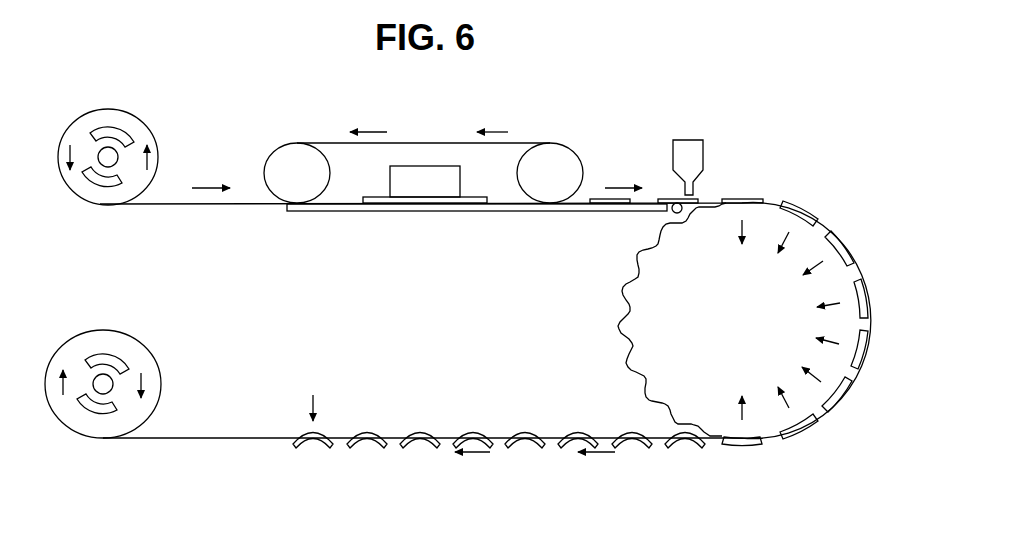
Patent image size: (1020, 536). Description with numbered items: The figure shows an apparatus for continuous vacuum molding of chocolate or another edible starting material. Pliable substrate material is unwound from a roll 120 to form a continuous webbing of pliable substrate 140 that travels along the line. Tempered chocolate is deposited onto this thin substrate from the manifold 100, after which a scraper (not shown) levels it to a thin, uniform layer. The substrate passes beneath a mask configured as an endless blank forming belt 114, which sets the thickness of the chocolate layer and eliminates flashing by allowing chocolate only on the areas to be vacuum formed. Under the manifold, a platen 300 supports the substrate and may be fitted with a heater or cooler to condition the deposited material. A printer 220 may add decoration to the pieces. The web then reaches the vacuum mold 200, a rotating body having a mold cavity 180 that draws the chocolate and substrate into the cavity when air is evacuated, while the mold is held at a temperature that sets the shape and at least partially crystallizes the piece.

The manifold 100 is at (405, 165).
The endless blank forming belt 114 is at (533, 145).
The roll 120 is at (122, 110).
The continuous webbing of pliable substrate 140 is at (175, 203).
The mold cavity 180 is at (683, 226).
The vacuum mold 200 is at (610, 320).
The printer 220 is at (705, 150).
The platen 300 is at (430, 211).